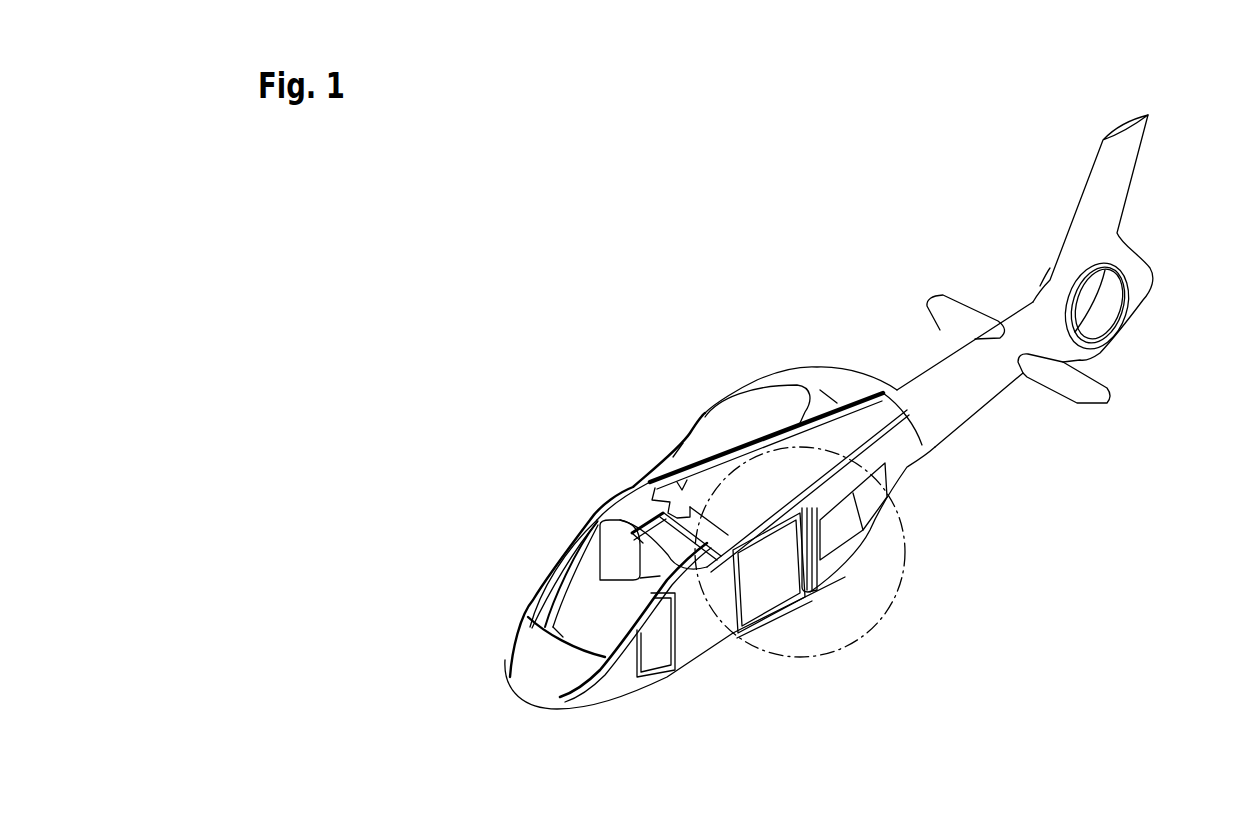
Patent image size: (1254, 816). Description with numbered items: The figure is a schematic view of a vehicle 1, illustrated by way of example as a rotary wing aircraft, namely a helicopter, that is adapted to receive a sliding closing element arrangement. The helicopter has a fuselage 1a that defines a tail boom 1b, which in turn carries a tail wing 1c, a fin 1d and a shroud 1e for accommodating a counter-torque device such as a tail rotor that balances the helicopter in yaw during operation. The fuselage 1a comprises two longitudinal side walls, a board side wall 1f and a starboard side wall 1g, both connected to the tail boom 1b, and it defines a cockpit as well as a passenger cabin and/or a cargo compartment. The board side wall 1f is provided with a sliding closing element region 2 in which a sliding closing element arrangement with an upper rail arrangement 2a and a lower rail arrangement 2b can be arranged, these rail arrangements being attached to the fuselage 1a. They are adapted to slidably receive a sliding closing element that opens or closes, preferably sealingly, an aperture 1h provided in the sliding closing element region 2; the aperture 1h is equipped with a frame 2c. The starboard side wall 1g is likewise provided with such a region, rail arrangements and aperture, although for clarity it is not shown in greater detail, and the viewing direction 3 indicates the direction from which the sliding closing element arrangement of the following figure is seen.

The vehicle 1 is at (583, 320).
The fuselage 1a is at (520, 660).
The tail boom 1b is at (953, 377).
The tail wing 1c is at (1075, 401).
The fin 1d is at (1128, 150).
The shroud 1e is at (1103, 307).
The board side wall 1f is at (893, 442).
The starboard side wall 1g is at (660, 480).
The aperture 1h is at (740, 598).
The sliding closing element region 2 is at (870, 627).
The upper rail arrangement 2a is at (795, 513).
The lower rail arrangement 2b is at (783, 613).
The frame 2c is at (797, 565).
The viewing direction 3 is at (752, 573).